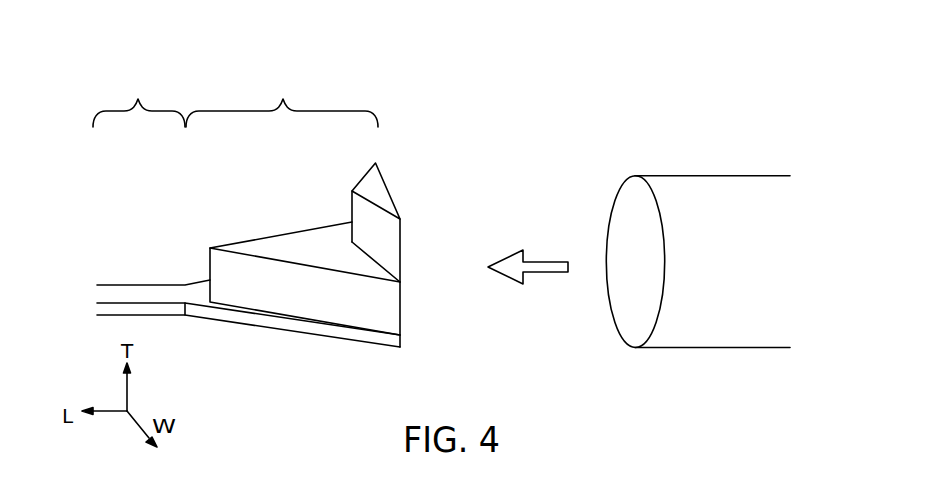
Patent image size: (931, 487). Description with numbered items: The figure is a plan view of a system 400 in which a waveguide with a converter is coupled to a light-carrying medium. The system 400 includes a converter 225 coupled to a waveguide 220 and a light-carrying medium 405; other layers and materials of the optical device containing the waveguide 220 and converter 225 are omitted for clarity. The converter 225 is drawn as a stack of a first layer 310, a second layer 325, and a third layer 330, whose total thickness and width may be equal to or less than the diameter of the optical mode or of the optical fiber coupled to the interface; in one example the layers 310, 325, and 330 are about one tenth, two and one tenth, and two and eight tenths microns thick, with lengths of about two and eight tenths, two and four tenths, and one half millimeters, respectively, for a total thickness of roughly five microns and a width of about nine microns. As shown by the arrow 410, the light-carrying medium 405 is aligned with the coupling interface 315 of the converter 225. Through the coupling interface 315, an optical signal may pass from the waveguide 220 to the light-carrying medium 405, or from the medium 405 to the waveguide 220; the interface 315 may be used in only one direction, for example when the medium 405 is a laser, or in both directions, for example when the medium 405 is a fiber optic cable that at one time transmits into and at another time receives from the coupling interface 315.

The waveguide 220 is at (139, 99).
The converter 225 is at (282, 99).
The first layer 310 is at (258, 327).
The coupling interface 315 is at (418, 215).
The second layer 325 is at (400, 307).
The third layer 330 is at (380, 177).
The system 400 is at (476, 94).
The light-carrying medium 405 is at (730, 175).
The arrow 410 is at (553, 257).